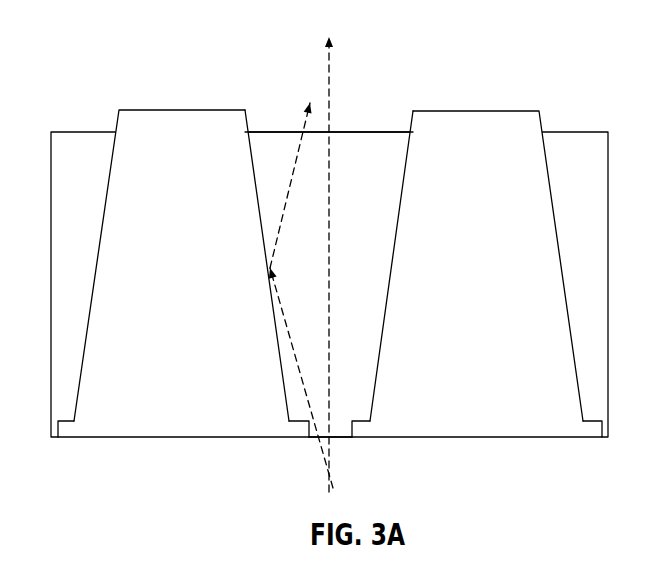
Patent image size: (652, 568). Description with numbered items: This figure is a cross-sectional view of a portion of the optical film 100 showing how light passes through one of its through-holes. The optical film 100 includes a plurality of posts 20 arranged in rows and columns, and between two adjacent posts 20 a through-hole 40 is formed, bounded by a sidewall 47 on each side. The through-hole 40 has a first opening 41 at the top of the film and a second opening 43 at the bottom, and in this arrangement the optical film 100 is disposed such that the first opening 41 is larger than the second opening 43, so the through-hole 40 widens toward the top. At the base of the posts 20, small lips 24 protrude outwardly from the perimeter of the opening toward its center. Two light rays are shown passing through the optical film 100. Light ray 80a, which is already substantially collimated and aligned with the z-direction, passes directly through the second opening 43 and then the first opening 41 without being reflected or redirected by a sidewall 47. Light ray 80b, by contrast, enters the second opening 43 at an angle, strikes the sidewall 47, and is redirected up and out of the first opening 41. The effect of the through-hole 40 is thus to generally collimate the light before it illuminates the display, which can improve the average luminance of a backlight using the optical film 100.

The optical film 100 is at (128, 78).
The post 20 is at (487, 130).
The lip 24 is at (71, 428).
The through-hole 40 is at (348, 322).
The first opening 41 is at (372, 152).
The second opening 43 is at (335, 411).
The sidewall 47 is at (257, 205).
The light ray 80a is at (330, 92).
The light ray 80b is at (290, 190).